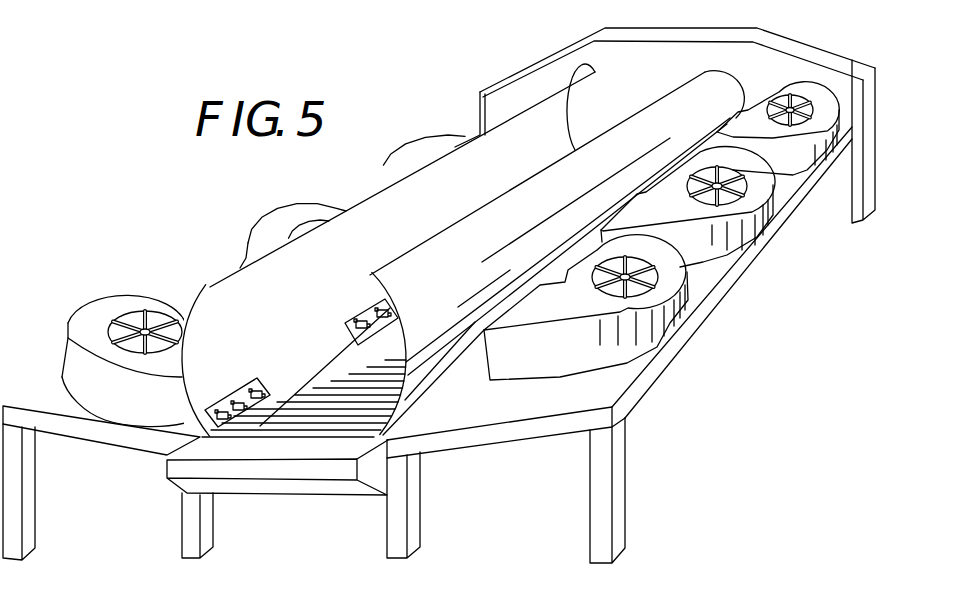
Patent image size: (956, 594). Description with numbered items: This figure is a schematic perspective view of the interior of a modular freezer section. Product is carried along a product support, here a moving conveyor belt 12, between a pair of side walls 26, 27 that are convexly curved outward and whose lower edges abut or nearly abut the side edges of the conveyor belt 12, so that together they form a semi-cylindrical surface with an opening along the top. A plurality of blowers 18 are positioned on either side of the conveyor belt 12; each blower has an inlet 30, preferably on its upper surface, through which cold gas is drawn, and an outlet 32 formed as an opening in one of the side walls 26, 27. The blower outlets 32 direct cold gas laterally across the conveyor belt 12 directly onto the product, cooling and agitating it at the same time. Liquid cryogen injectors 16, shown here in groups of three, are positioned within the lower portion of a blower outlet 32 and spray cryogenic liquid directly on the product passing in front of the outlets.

The conveyor belt 12 is at (365, 398).
The liquid cryogen injector 16 is at (270, 400).
The blower 18 is at (796, 185).
The side wall 26 is at (443, 308).
The side wall 27 is at (288, 308).
The blower inlet 30 is at (613, 295).
The blower outlet 32 is at (210, 413).